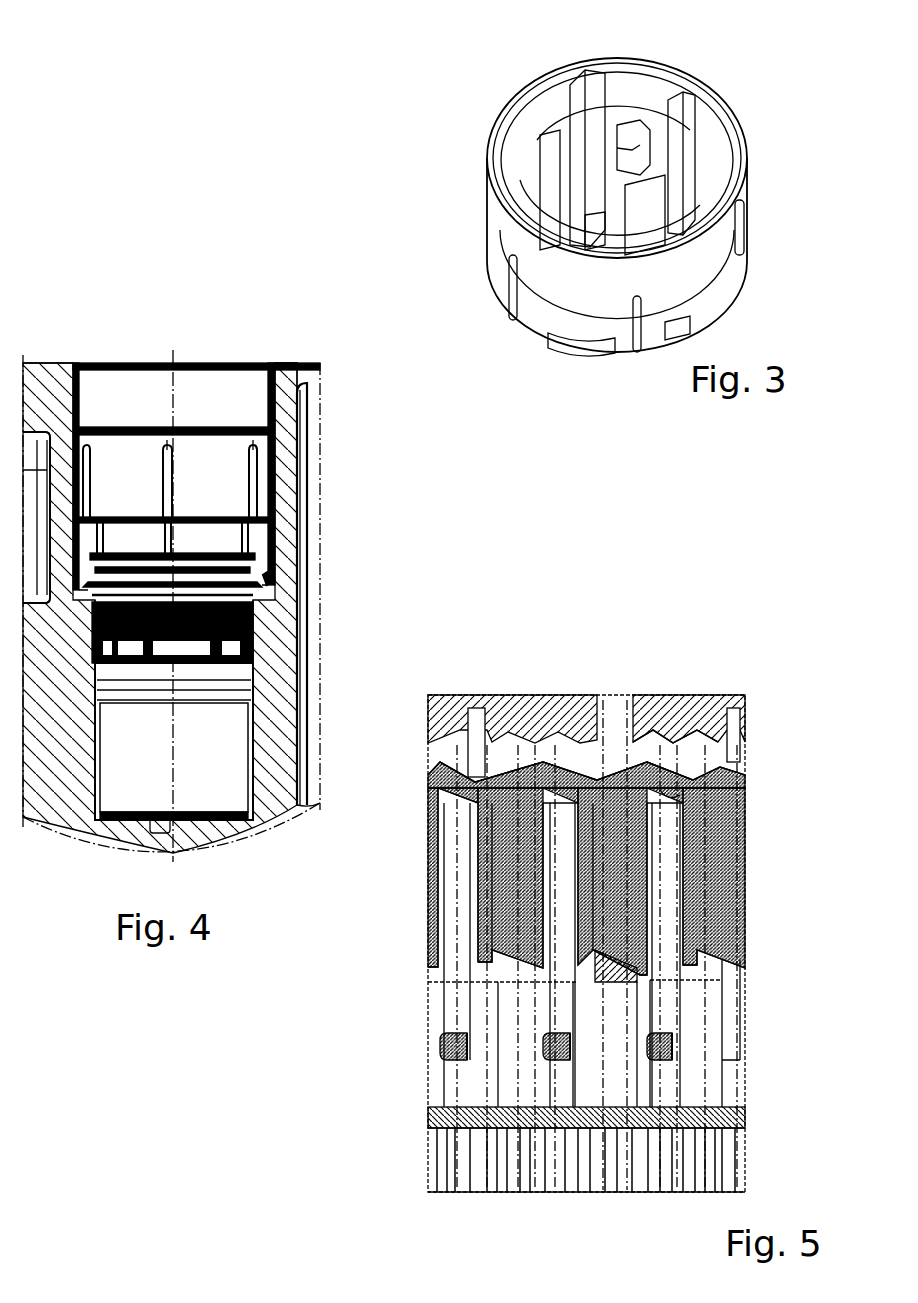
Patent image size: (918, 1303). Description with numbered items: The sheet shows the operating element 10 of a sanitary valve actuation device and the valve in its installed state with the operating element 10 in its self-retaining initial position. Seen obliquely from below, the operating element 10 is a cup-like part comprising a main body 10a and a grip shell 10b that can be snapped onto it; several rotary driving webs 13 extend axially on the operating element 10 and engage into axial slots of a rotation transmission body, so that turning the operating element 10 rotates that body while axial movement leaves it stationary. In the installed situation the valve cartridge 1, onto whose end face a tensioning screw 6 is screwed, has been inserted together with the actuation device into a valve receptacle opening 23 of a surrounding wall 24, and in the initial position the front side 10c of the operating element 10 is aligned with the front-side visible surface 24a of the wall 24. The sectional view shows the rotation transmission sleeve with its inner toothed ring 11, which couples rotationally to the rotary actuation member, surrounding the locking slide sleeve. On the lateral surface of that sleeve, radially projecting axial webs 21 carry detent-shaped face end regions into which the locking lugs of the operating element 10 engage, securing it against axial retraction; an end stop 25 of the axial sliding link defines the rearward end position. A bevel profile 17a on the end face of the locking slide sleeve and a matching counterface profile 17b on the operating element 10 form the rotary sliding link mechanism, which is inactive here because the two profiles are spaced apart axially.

In FIG. 4, the valve cartridge 1 is at (228, 787).
In FIG. 4, the tensioning screw 6 is at (268, 571).
In FIG. 5, the operating element 10 is at (544, 708).
In FIG. 4, the main body 10a is at (263, 446).
In FIG. 4, the grip shell 10b is at (238, 385).
In FIG. 4, the front side 10c is at (183, 363).
In FIG. 5, the inner toothed ring 11 is at (722, 1157).
In FIG. 3, the rotary driving web 13 is at (603, 178).
In FIG. 5, the bevel profile 17a is at (713, 738).
In FIG. 5, the counterface profile 17b is at (678, 768).
In FIG. 5, the axial web 21 is at (592, 915).
In FIG. 4, the valve receptacle opening 23 is at (273, 583).
In FIG. 4, the surrounding wall 24 is at (275, 638).
In FIG. 4, the front-side visible surface 24a is at (33, 363).
In FIG. 5, the end stop 25 is at (668, 800).